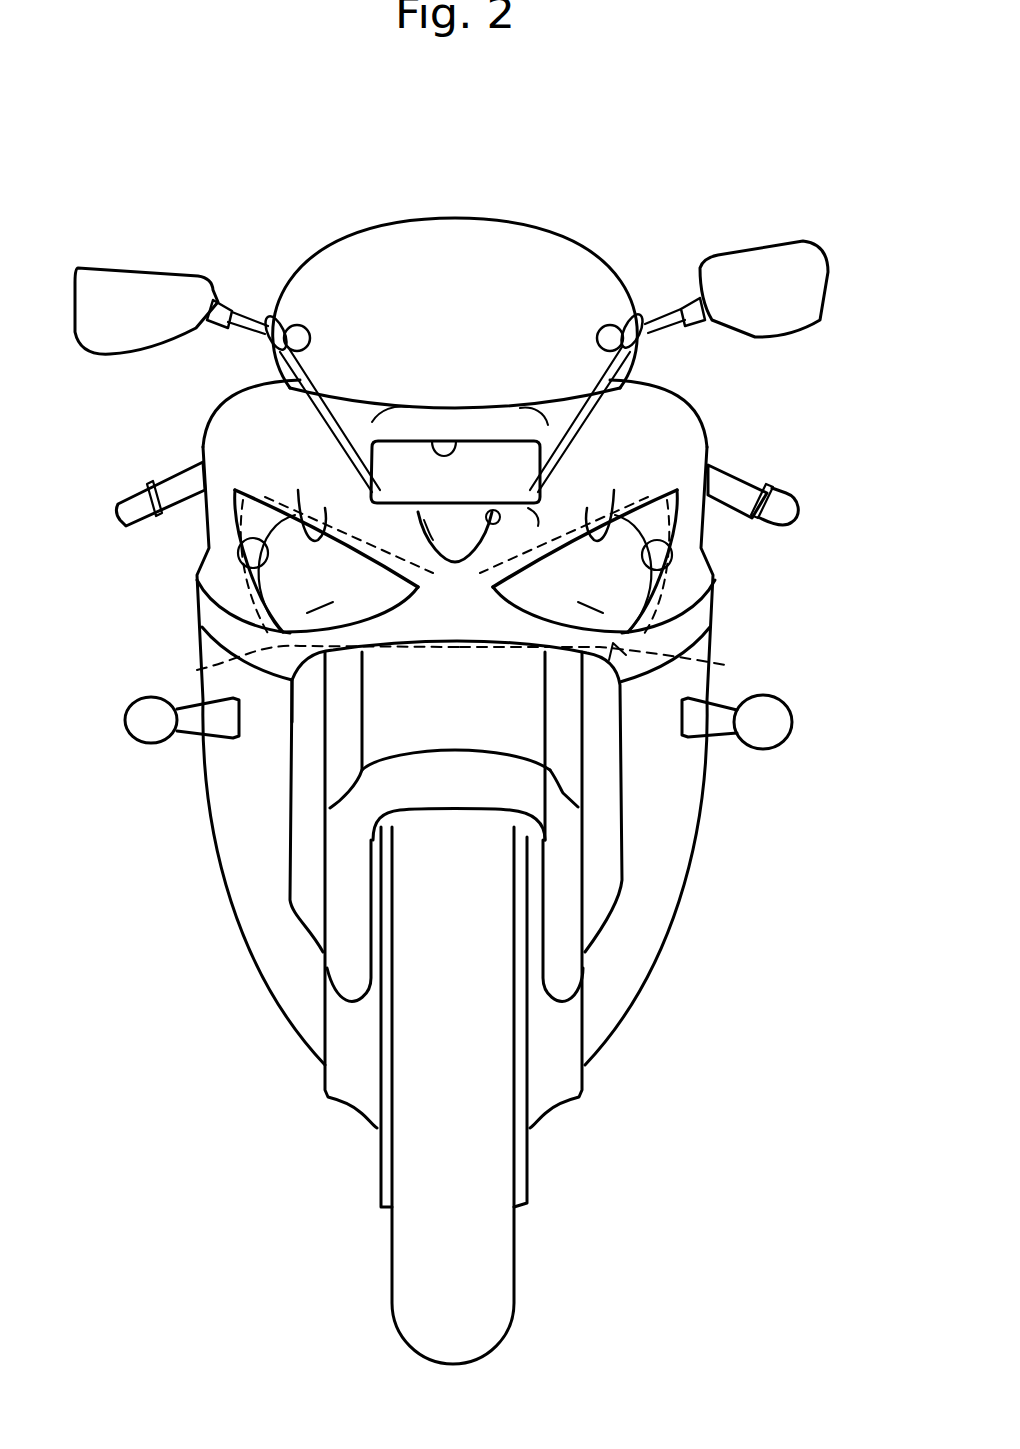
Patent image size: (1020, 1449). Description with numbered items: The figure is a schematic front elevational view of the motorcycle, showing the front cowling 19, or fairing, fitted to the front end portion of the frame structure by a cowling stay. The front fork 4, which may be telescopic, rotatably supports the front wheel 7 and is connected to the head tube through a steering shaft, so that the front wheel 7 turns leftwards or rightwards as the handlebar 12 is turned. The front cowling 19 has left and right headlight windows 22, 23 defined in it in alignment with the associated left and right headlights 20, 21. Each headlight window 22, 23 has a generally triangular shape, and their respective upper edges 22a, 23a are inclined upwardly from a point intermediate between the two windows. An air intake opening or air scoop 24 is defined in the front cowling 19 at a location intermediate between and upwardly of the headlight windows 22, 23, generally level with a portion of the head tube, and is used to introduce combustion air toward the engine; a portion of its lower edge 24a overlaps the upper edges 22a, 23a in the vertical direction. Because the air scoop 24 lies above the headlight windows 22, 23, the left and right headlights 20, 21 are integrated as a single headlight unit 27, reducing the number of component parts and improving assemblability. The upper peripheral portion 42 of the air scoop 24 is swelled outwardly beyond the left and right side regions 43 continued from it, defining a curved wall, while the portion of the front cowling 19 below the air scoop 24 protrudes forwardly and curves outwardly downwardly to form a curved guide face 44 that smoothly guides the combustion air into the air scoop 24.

The front fork 4 is at (347, 763).
The front wheel 7 is at (483, 1270).
The handlebar 12 is at (178, 468).
The front cowling 19 is at (716, 808).
The left headlight 20 is at (197, 670).
The right headlight 21 is at (730, 666).
The left headlight window 22 is at (247, 577).
The upper edge of left headlight window 22a is at (317, 510).
The right headlight window 23 is at (648, 590).
The upper edge of right headlight window 23a is at (620, 507).
The air scoop 24 is at (430, 437).
The lower edge of air scoop 24a is at (537, 518).
The headlight unit 27 is at (618, 652).
The upper peripheral portion 42 is at (455, 418).
The side regions 43 is at (352, 497).
The curved guide face 44 is at (458, 545).